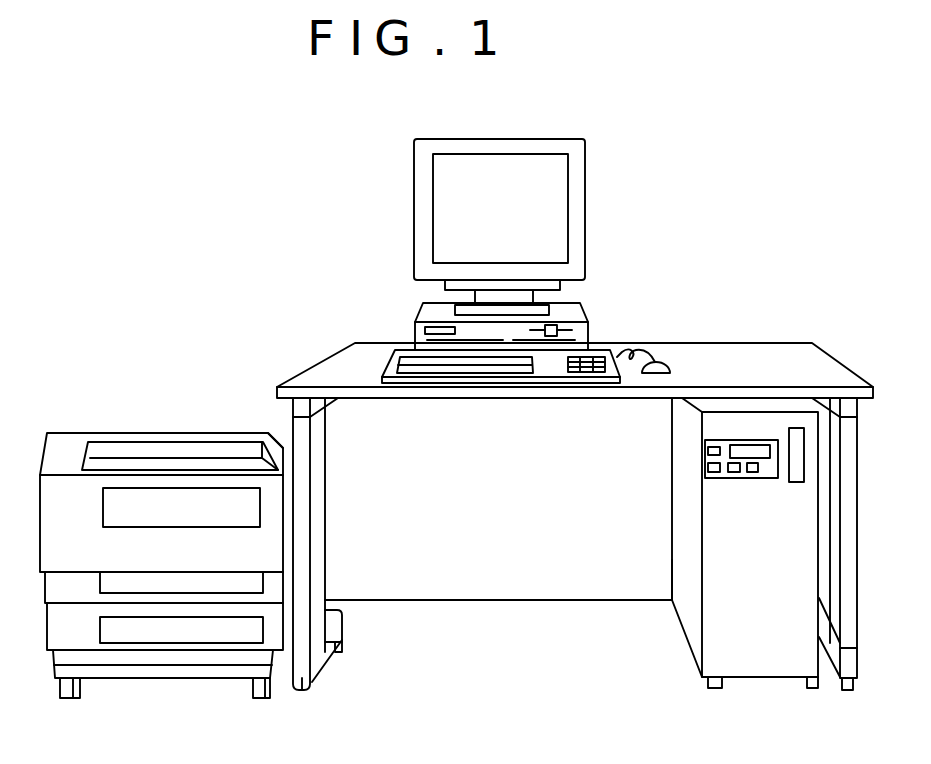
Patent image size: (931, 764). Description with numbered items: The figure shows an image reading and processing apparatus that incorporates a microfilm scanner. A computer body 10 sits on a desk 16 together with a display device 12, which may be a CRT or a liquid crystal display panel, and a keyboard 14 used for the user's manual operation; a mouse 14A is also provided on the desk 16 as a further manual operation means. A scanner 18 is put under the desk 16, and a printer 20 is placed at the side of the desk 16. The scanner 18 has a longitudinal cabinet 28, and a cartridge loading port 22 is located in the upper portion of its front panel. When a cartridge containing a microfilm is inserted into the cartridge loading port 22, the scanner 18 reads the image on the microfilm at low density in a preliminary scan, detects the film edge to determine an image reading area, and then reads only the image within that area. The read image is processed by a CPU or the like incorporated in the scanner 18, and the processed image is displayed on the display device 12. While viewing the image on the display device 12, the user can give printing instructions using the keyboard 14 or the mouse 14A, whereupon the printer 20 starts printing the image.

The computer body 10 is at (588, 313).
The display device 12 is at (588, 184).
The keyboard 14 is at (385, 371).
The mouse 14A is at (662, 365).
The desk 16 is at (742, 343).
The scanner 18 is at (760, 660).
The printer 20 is at (147, 433).
The cartridge loading port 22 is at (798, 475).
The longitudinal cabinet 28 is at (717, 622).